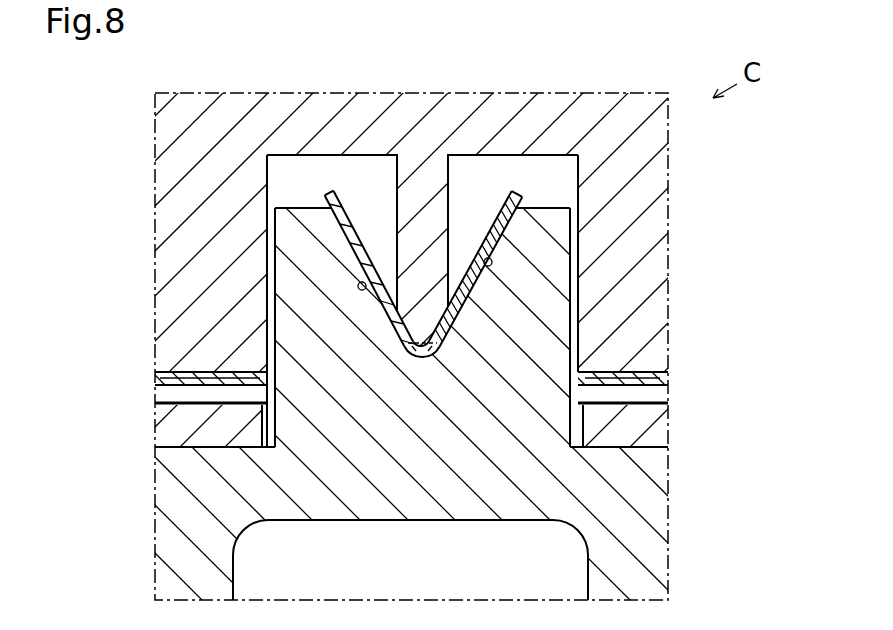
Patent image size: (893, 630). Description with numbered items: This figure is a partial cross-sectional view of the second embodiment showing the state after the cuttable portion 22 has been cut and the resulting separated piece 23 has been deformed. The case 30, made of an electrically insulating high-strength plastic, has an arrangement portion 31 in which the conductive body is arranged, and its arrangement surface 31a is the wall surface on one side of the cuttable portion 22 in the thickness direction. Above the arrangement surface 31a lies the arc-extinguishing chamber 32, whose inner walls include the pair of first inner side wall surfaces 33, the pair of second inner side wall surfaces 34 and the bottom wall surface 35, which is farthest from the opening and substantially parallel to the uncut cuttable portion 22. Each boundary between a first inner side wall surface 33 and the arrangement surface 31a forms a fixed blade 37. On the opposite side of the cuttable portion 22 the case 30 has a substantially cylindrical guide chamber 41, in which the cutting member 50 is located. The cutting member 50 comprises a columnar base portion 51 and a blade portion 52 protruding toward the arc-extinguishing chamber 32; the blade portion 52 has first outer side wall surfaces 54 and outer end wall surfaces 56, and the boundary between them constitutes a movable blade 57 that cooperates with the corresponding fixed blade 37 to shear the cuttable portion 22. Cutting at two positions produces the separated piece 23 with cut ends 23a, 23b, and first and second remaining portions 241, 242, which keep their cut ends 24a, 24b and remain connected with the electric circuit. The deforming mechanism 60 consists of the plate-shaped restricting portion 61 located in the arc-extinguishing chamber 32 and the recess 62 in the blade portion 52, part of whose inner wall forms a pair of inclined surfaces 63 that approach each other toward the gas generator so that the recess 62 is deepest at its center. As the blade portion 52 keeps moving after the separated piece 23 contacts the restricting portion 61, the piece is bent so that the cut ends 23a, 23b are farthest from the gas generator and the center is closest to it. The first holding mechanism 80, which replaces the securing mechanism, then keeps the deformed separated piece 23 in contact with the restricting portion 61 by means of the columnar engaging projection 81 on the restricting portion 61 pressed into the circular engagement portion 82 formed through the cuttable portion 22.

The case 30 is at (657, 132).
The arc-extinguishing chamber 32 is at (386, 194).
The first inner side wall surfaces 33 is at (266, 152).
The second inner side wall surfaces 34 is at (575, 190).
The bottom wall surface 35 is at (343, 153).
The fixed blade 37 is at (265, 363).
The guide chamber 41 is at (178, 470).
The cutting member 50 is at (676, 442).
The base portion 51 is at (650, 468).
The blade portion 52 is at (585, 425).
The first outer side wall surfaces 54 is at (283, 521).
The outer end wall surfaces 56 is at (300, 208).
The movable blade 57 is at (272, 207).
The deforming mechanism 60 is at (497, 269).
The restricting portion 61 is at (464, 297).
The recess 62 is at (456, 326).
The inclined surfaces 63 is at (358, 287).
The first holding mechanism 80 is at (422, 396).
The engaging projection 81 is at (410, 362).
The engagement portion 82 is at (437, 362).
The separated piece 23 is at (417, 253).
The cut end 23a is at (325, 194).
The cut end 23b is at (497, 253).
The cut end 24a is at (270, 378).
The cut end 24b is at (570, 388).
The cuttable portion 22 is at (406, 367).
The first remaining portion 241 is at (178, 380).
The second remaining portion 242 is at (668, 382).
The arrangement portion 31 is at (446, 315).
The arrangement surface 31a is at (170, 393).